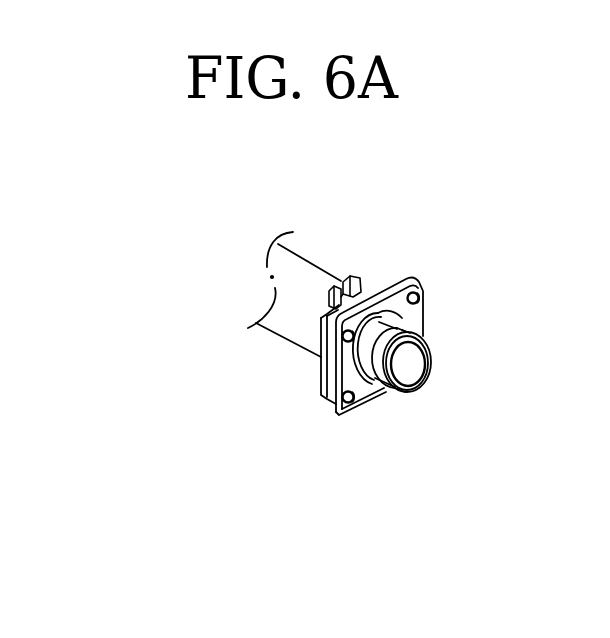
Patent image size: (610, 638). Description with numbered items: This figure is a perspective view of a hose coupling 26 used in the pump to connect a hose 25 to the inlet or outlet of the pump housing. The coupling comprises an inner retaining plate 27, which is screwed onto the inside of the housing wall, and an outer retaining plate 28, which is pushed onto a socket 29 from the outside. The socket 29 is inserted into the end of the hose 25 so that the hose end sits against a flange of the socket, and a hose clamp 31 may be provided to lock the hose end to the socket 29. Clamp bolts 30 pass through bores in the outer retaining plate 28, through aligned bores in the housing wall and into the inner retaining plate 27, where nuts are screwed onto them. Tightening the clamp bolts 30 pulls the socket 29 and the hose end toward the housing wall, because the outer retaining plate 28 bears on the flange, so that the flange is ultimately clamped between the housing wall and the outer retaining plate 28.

The hose 25 is at (300, 303).
The hose coupling 26 is at (270, 397).
The inner retaining plate 27 is at (392, 280).
The outer retaining plate 28 is at (415, 315).
The socket 29 is at (432, 352).
The clamp bolt 30 is at (353, 407).
The hose clamp 31 is at (345, 285).